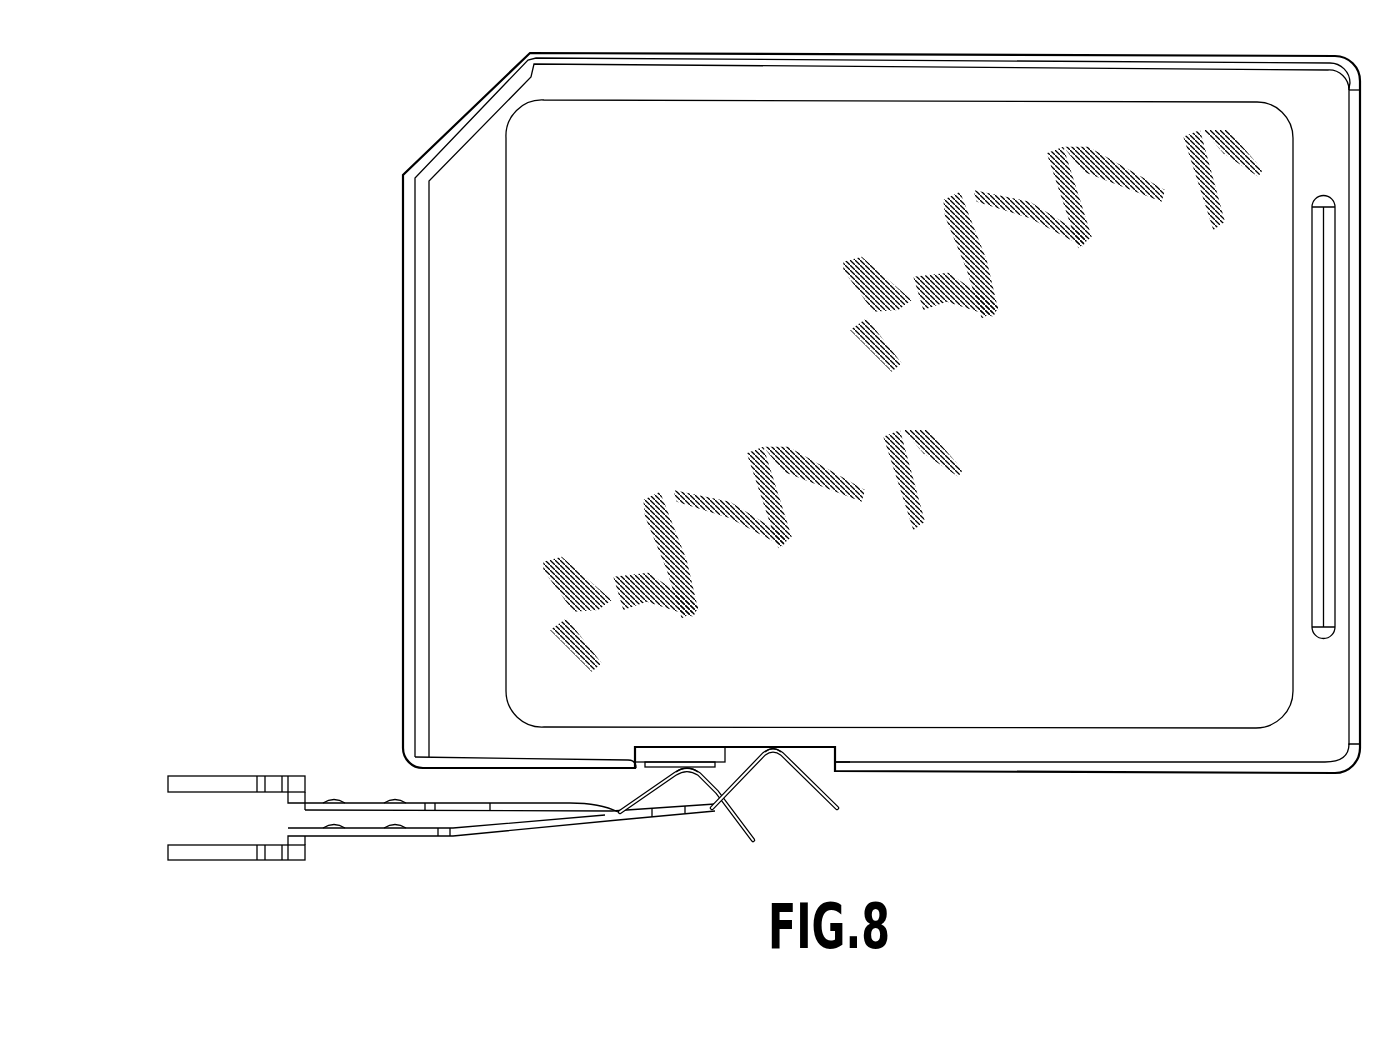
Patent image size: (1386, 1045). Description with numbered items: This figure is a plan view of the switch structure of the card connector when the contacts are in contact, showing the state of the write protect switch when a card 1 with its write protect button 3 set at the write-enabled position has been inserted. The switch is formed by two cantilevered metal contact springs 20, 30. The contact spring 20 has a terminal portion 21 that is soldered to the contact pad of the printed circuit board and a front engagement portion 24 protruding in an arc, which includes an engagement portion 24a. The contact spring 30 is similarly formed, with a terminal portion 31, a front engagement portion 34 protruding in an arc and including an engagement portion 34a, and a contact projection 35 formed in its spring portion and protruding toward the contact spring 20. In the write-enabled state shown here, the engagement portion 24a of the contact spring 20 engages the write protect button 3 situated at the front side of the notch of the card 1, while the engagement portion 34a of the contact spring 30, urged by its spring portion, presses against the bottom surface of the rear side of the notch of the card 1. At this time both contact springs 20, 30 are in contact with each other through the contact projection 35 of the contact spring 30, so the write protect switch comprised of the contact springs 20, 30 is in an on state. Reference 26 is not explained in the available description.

The card 1 is at (860, 413).
The write protect button 3 is at (712, 752).
The contact spring 20 is at (485, 785).
The terminal portion 21 is at (210, 777).
The front engagement portion 24 is at (635, 778).
The engagement portion 24a is at (690, 772).
The recess 26 is at (818, 755).
The contact spring 30 is at (502, 845).
The terminal portion 31 is at (218, 850).
The front engagement portion 34 is at (743, 777).
The engagement portion 34a is at (777, 752).
The contact projection 35 is at (578, 815).